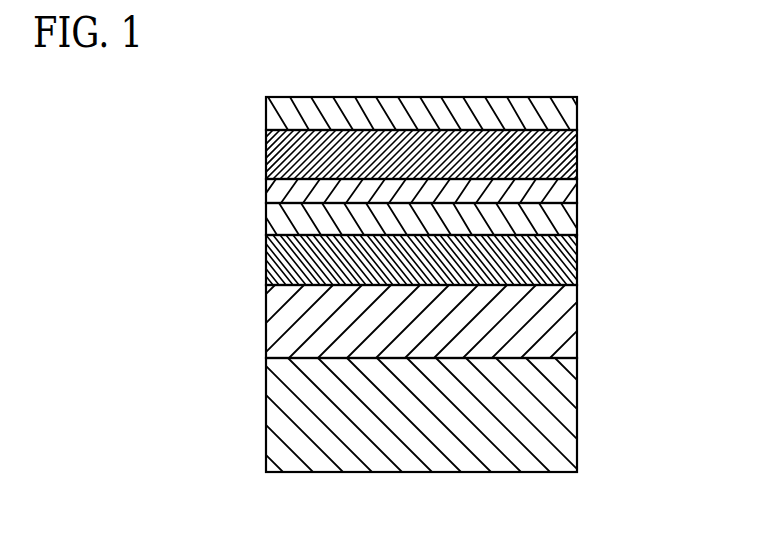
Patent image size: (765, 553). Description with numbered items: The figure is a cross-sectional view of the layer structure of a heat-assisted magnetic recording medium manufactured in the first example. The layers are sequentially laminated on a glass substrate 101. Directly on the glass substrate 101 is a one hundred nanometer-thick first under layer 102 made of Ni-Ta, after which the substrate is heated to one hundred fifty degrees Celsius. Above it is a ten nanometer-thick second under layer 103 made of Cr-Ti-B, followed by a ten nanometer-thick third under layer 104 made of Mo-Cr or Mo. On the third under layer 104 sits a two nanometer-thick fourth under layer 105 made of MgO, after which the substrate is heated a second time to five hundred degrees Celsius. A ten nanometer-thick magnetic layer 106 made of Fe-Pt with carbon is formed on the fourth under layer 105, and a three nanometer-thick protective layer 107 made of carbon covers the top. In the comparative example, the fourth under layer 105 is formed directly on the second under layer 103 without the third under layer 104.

The glass substrate 101 is at (573, 415).
The first under layer 102 is at (573, 322).
The second under layer 103 is at (573, 260).
The third under layer 104 is at (573, 218).
The fourth under layer 105 is at (573, 191).
The magnetic layer 106 is at (573, 153).
The protective layer 107 is at (572, 113).